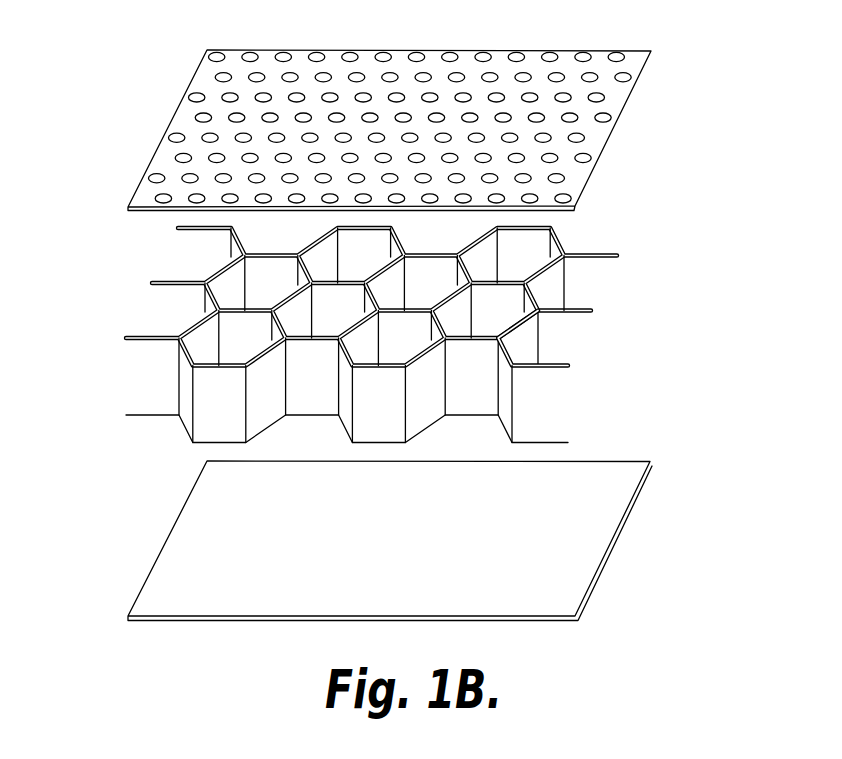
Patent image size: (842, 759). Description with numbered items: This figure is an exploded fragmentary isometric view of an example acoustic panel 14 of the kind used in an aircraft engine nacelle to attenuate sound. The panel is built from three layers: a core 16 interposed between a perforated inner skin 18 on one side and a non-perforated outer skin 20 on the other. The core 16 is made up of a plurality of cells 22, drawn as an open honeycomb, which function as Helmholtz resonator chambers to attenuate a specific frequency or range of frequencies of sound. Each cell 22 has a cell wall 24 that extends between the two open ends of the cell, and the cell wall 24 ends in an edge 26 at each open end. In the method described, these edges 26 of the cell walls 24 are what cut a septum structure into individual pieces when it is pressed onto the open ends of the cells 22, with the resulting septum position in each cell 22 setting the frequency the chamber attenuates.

The acoustic panel 14 is at (683, 70).
The core 16 is at (30, 533).
The perforated inner skin 18 is at (597, 137).
The non-perforated outer skin 20 is at (607, 523).
The cells 22 is at (663, 362).
The cell wall 24 is at (557, 411).
The edge 26 is at (568, 343).